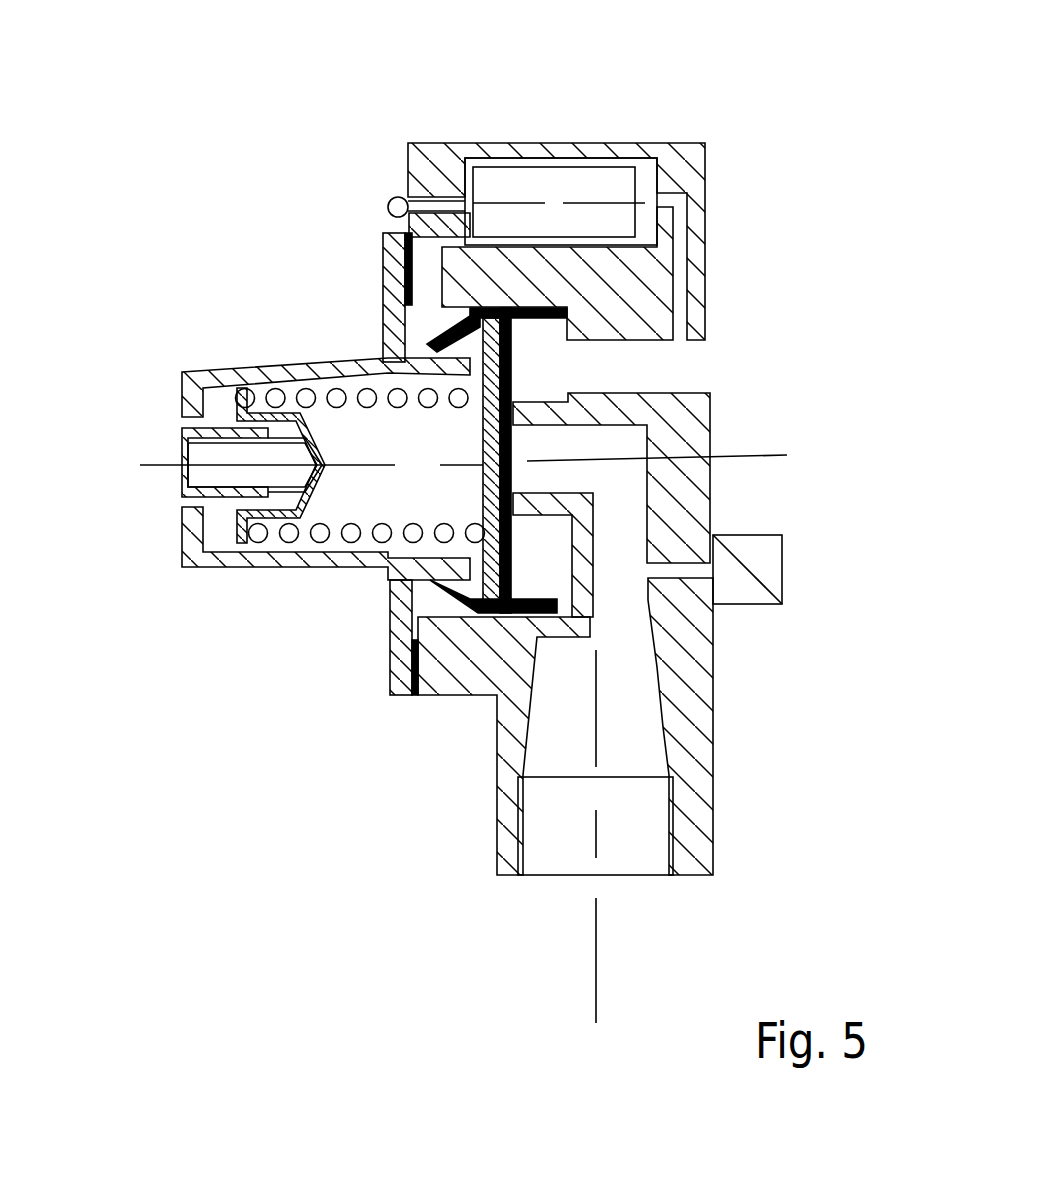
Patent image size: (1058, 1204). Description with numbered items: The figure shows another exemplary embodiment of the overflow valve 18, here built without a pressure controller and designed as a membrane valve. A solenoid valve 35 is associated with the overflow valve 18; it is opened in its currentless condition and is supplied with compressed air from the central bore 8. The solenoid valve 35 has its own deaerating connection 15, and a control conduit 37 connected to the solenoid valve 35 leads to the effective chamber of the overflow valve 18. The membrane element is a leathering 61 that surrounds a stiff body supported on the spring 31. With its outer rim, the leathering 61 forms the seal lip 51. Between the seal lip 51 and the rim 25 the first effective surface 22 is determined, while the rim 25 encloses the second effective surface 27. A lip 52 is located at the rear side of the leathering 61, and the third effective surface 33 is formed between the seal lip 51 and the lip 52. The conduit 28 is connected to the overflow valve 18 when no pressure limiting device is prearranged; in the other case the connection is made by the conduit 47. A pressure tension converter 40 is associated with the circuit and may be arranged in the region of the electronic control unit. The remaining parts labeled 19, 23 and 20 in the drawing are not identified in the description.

The overflow valve 18 is at (174, 190).
The central bore 8 is at (630, 370).
The solenoid valve 35 is at (540, 187).
The seal lip 51 is at (550, 302).
The deaerating connection 15 is at (396, 197).
The control conduit 37 is at (350, 188).
The third effective surface 33 is at (369, 313).
The lip 52 is at (369, 183).
The leathering 61 is at (674, 556).
The spring 31 is at (282, 528).
The plug 20 is at (482, 447).
The first effective surface 22 is at (513, 396).
The rim 25 is at (525, 418).
The valve chamber 19 is at (714, 427).
The sealing surface 23 is at (543, 372).
The second effective surface 27 is at (513, 479).
The pressure tension converter 40 is at (768, 573).
The conduit 28 is at (671, 800).
The conduit 47 is at (638, 724).